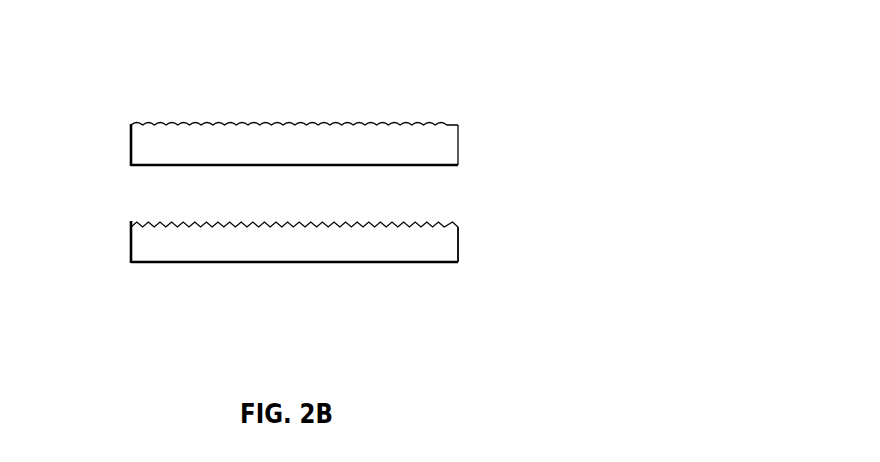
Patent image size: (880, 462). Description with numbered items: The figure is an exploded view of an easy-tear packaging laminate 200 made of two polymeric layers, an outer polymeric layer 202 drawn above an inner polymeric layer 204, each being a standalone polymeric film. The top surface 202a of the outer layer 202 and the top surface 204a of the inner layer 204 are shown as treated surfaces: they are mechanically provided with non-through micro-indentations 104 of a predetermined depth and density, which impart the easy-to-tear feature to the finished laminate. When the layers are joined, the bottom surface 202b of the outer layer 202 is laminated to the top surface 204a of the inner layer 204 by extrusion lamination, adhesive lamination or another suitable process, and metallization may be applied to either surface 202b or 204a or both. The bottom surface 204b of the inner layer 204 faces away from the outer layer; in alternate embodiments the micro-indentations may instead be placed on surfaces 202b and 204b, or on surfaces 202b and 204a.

The packaging laminate 200 is at (634, 71).
The micro-indentations 104 is at (385, 123).
The outer polymeric layer 202 is at (470, 166).
The top surface of the outer layer 202a is at (152, 112).
The bottom surface of the outer layer 202b is at (158, 170).
The inner polymeric layer 204 is at (465, 251).
The top surface of the inner layer 204a is at (158, 215).
The bottom surface of the inner layer 204b is at (160, 268).